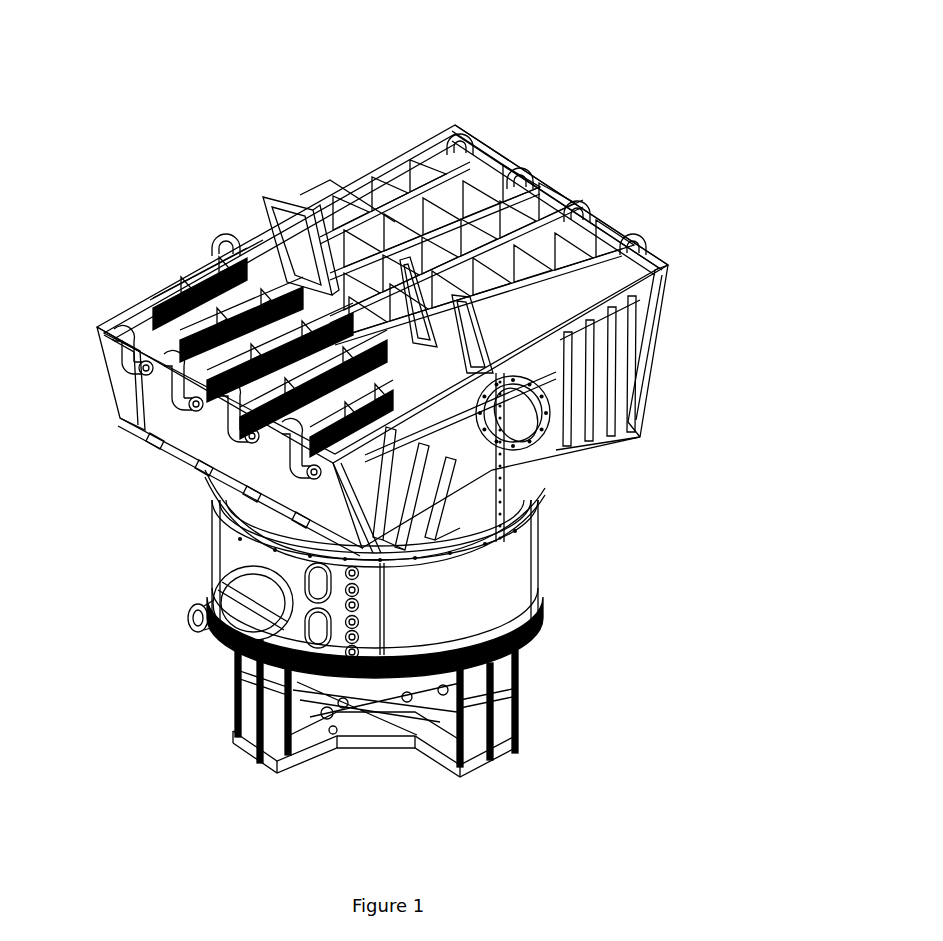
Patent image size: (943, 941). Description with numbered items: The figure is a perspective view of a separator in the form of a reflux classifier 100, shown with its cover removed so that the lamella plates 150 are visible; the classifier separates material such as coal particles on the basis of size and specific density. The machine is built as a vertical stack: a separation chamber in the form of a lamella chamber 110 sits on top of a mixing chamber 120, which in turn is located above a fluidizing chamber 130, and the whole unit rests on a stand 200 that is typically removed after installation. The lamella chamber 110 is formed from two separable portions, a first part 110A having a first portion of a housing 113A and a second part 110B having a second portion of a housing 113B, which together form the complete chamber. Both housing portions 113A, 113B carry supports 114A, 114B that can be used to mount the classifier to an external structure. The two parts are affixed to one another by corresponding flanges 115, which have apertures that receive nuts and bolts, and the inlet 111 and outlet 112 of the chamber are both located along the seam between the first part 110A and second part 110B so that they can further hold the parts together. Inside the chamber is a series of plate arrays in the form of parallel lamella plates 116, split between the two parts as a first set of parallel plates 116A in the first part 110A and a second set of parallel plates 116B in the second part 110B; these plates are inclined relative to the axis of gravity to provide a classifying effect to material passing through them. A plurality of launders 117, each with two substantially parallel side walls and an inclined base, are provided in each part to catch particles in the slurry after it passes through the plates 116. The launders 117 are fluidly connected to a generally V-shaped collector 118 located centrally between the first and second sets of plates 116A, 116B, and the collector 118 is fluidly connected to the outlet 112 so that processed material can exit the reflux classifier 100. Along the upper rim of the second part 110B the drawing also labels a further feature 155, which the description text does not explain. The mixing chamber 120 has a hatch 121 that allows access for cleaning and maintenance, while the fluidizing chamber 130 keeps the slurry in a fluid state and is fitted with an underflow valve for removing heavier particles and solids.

The reflux classifier 100 is at (660, 88).
The lamella chamber 110 is at (634, 324).
The first part of the lamella chamber 110A is at (97, 463).
The second part of the lamella chamber 110B is at (403, 117).
The inlet 111 is at (206, 227).
The outlet 112 is at (553, 453).
The first portion of housing 113A is at (128, 396).
The second portion of housing 113B is at (668, 293).
The supports 114A is at (462, 512).
The supports 114B is at (644, 424).
The flanges 115 is at (507, 495).
The lamella plates 116 is at (242, 128).
The first set of parallel plates 116A is at (188, 286).
The second set of parallel plates 116B is at (496, 165).
The launders 117 is at (592, 212).
The collector 118 is at (272, 235).
The mixing chamber 120 is at (481, 608).
The hatch 121 is at (238, 638).
The fluidizing chamber 130 is at (270, 752).
The lamella plates 150 is at (150, 316).
The pipe elbows on rear rim 155 is at (657, 217).
The stand 200 is at (529, 755).